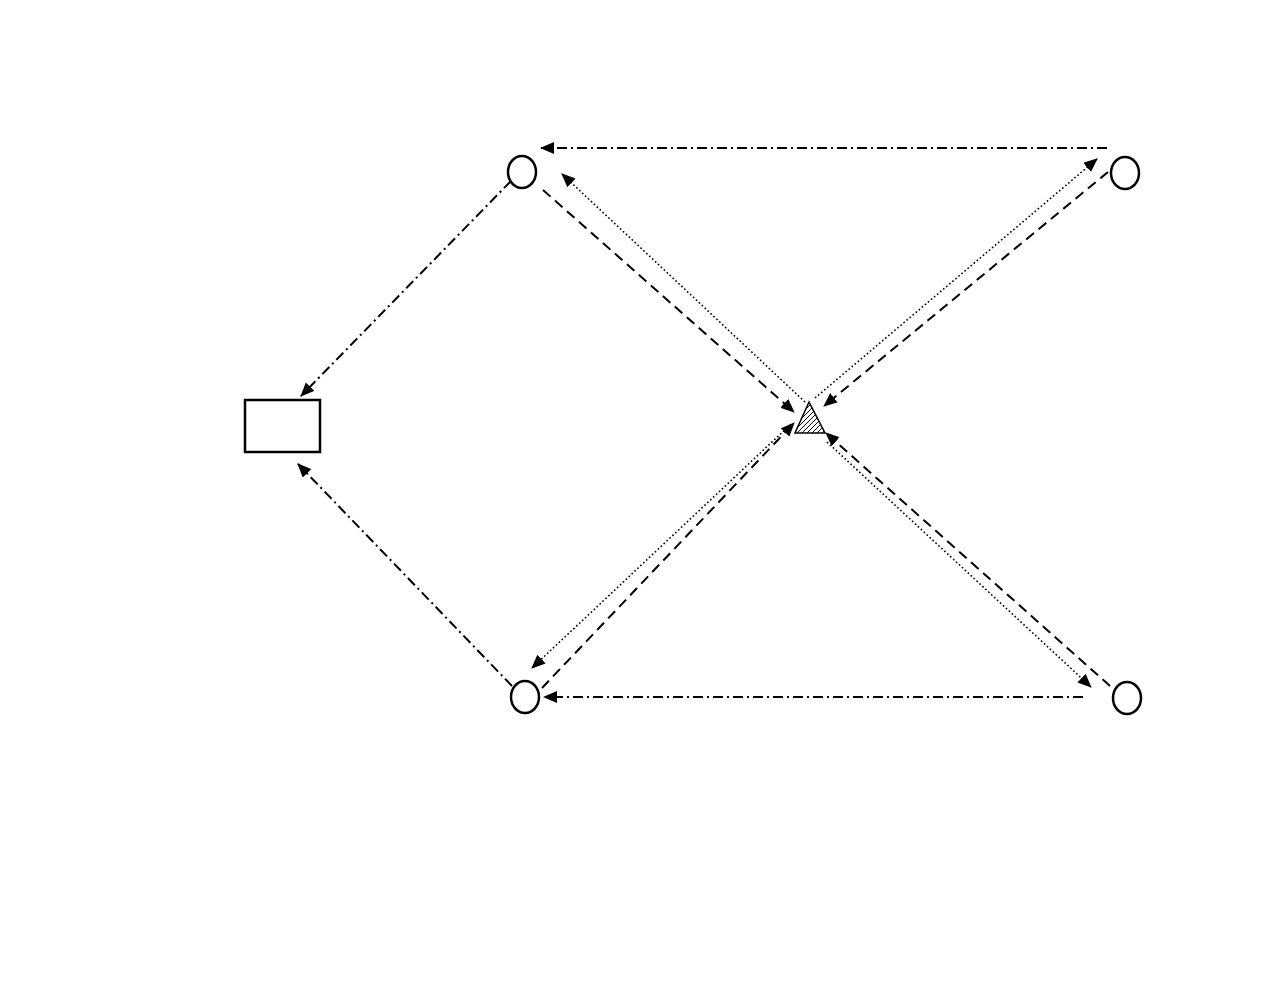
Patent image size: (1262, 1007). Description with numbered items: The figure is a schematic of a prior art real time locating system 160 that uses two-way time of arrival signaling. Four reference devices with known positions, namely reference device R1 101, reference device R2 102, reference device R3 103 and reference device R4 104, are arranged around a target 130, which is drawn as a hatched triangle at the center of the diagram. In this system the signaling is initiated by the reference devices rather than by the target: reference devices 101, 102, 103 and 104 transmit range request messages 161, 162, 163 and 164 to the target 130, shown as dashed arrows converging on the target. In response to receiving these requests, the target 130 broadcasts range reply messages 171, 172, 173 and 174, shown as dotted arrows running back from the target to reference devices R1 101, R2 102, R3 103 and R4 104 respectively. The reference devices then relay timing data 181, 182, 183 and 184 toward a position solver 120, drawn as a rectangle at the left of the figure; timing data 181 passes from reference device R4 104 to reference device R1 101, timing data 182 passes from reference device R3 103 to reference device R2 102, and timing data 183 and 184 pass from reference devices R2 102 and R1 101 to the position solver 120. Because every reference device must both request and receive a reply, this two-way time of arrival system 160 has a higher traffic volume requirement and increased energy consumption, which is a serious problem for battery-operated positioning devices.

The two-way time of arrival RTLS system 160 is at (308, 760).
The reference device R1 101 is at (513, 708).
The reference device R2 102 is at (521, 157).
The reference device R3 103 is at (1140, 168).
The reference device R4 104 is at (1140, 688).
The position solver 120 is at (247, 420).
The target 130 is at (810, 435).
The range request message 161 is at (675, 545).
The range request message 162 is at (622, 265).
The range request message 163 is at (1005, 258).
The range request message 164 is at (1028, 605).
The range reply message 171 is at (580, 613).
The range reply message 172 is at (675, 287).
The range reply message 173 is at (953, 282).
The range reply message 174 is at (943, 558).
The timing data 181 is at (787, 698).
The timing data 182 is at (805, 148).
The timing data 183 is at (425, 257).
The timing data 184 is at (378, 560).